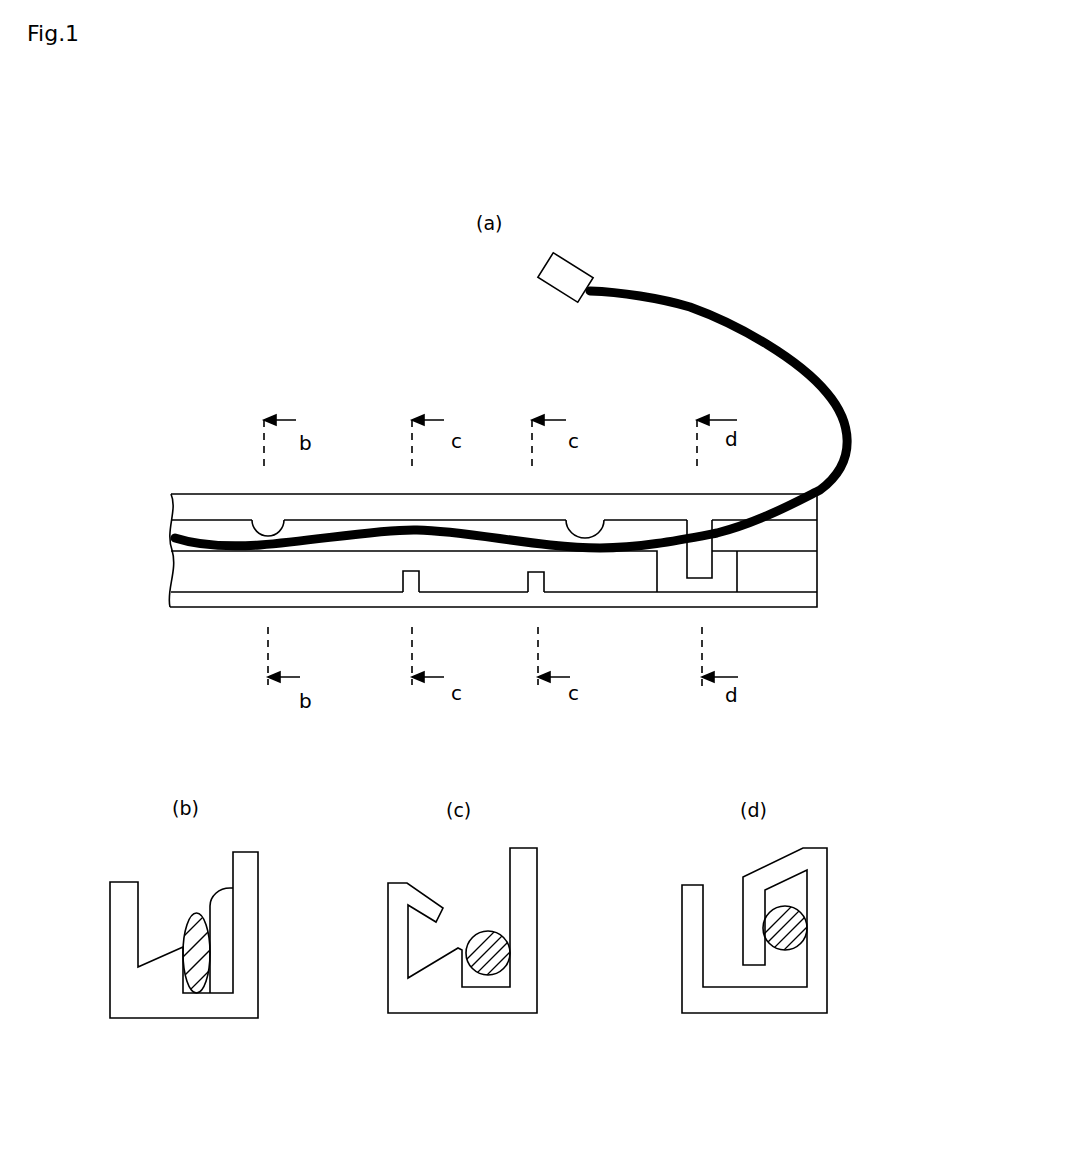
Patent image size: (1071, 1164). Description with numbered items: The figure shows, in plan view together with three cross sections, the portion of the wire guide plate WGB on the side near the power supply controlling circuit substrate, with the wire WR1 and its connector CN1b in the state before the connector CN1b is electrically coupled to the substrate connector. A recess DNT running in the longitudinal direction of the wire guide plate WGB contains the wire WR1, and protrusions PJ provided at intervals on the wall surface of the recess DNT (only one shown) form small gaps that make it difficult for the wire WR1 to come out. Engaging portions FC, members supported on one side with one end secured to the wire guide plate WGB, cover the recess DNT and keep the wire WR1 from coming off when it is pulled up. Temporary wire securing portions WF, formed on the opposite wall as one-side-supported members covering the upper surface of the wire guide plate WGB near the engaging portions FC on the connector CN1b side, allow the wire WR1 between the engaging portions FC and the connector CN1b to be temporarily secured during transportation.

The wire guide plate WGB is at (170, 632).
The wire WR1 is at (765, 332).
The connector CN1b is at (570, 270).
The protrusion PJ is at (270, 525).
The recess DNT is at (598, 522).
The engaging portion FC is at (700, 553).
The temporary wire securing portion WF is at (408, 585).